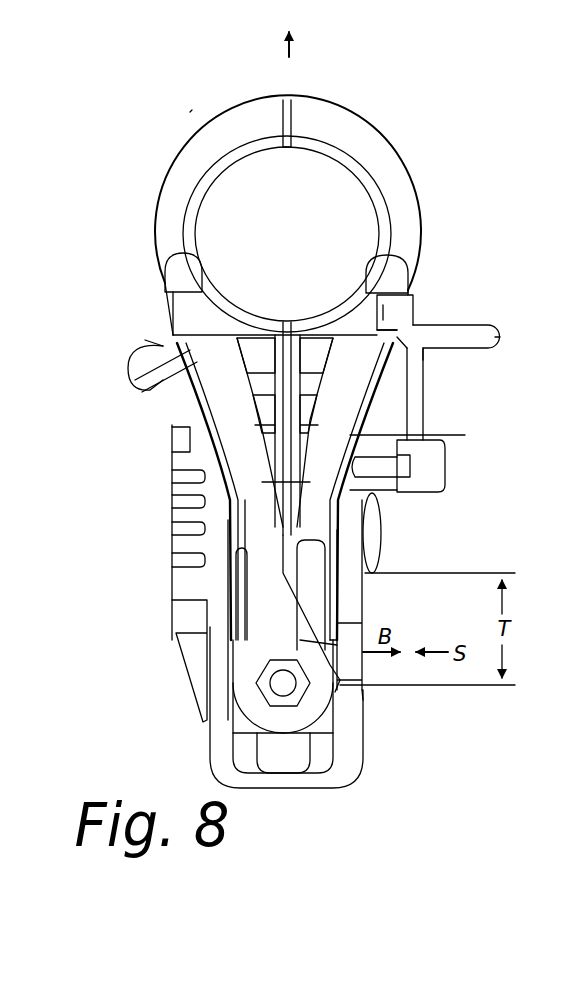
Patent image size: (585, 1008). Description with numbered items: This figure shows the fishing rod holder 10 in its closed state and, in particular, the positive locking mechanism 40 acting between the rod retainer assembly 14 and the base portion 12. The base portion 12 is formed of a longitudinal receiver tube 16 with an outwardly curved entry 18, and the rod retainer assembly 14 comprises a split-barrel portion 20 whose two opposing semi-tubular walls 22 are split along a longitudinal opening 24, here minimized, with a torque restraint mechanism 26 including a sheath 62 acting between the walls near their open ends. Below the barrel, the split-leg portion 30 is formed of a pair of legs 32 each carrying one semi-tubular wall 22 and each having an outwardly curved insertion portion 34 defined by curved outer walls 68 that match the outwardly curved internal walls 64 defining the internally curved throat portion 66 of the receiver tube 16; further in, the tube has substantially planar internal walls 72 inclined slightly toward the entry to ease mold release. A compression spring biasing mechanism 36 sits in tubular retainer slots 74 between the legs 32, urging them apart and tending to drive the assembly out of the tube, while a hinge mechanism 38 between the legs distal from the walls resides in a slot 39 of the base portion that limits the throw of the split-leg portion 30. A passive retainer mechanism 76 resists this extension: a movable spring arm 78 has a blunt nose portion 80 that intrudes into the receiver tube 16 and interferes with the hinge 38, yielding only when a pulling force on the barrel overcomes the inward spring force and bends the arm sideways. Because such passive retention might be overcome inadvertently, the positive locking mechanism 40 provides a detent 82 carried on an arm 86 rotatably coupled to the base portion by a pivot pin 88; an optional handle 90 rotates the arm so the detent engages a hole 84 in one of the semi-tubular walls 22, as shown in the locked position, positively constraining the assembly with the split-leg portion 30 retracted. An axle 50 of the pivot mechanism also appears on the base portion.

The fishing rod holder 10 is at (453, 106).
The base portion 12 is at (183, 663).
The rod retainer assembly 14 is at (172, 160).
The longitudinal receiver tube 16 is at (230, 530).
The outwardly curved entry 18 is at (380, 352).
The split-barrel portion 20 is at (370, 147).
The semi-tubular walls 22 is at (204, 130).
The longitudinal opening 24 is at (286, 100).
The torque restraint mechanism 26 is at (128, 363).
The split-leg portion 30 is at (190, 360).
The legs 32 is at (210, 380).
The insertion portion 34 is at (220, 457).
The biasing mechanism 36 is at (283, 330).
The hinge mechanism 38 is at (290, 683).
The slot 39 is at (317, 727).
The positive locking mechanism 40 is at (492, 342).
The axle 50 is at (381, 543).
The sheath 62 is at (145, 340).
The outwardly curved internal walls 64 is at (217, 442).
The internally curved throat portion 66 is at (340, 513).
The curved outer walls 68 is at (220, 480).
The internal walls 72 is at (233, 727).
The tubular retainer slots 74 is at (245, 335).
The passive retainer mechanism 76 is at (335, 655).
The movable spring arm 78 is at (363, 660).
The blunt nose portion 80 is at (335, 653).
The detent 82 is at (395, 313).
The hole 84 is at (177, 313).
The arm 86 is at (427, 380).
The pivot pin 88 is at (445, 463).
The handle 90 is at (455, 327).